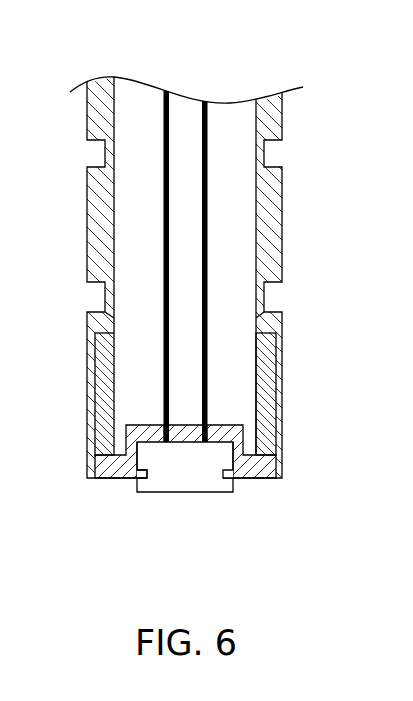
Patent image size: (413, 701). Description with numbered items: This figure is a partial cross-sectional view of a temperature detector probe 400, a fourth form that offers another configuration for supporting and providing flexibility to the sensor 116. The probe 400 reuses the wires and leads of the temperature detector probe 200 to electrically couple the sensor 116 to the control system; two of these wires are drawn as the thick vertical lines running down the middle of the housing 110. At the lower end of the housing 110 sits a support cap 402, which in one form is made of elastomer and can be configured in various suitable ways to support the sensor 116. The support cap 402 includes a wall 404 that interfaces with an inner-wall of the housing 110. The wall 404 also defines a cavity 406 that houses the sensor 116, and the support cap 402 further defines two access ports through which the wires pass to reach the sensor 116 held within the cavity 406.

The temperature detector probe 400 is at (211, 300).
The housing 110 is at (282, 122).
The wall 404 is at (256, 370).
The support cap 402 is at (268, 461).
The cavity 406 is at (138, 452).
The sensor 116 is at (183, 465).
The temperature detector probe 200 is at (405, 340).